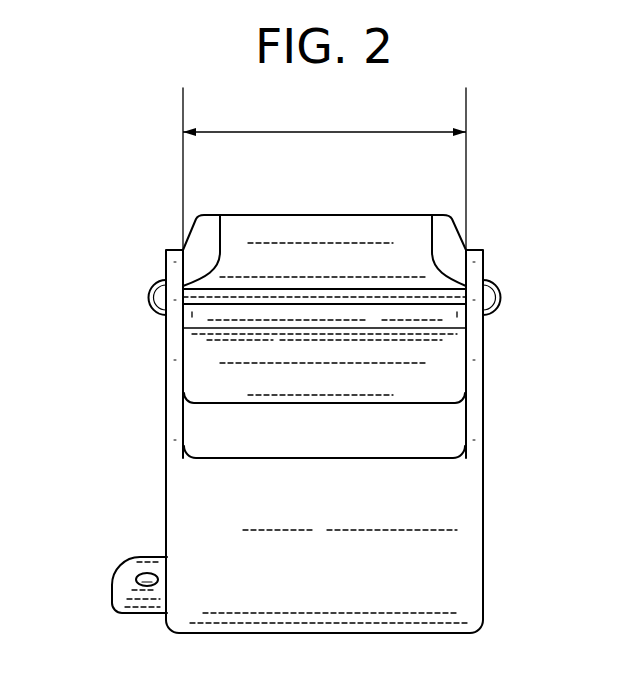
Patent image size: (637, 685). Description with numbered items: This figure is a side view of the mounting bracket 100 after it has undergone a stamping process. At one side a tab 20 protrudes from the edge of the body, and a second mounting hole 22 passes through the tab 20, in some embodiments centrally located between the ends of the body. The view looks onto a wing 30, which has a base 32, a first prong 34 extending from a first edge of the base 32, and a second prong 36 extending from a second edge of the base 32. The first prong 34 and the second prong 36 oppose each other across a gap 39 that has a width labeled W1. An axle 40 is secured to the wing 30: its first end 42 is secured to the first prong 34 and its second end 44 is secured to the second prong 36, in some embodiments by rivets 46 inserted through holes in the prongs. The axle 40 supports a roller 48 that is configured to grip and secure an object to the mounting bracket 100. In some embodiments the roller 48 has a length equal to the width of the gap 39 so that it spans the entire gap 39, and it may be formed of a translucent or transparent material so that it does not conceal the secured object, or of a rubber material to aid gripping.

The mounting bracket 100 is at (114, 212).
The tab 20 is at (118, 590).
The second mounting hole 22 is at (147, 572).
The wing 30 is at (456, 496).
The base 32 is at (437, 578).
The first prong 34 is at (175, 365).
The second prong 36 is at (472, 357).
The gap 39 is at (240, 422).
The axle 40 is at (334, 302).
The first end 42 is at (220, 215).
The second end 44 is at (432, 215).
The rivets 46 is at (148, 297).
The roller 48 is at (407, 372).